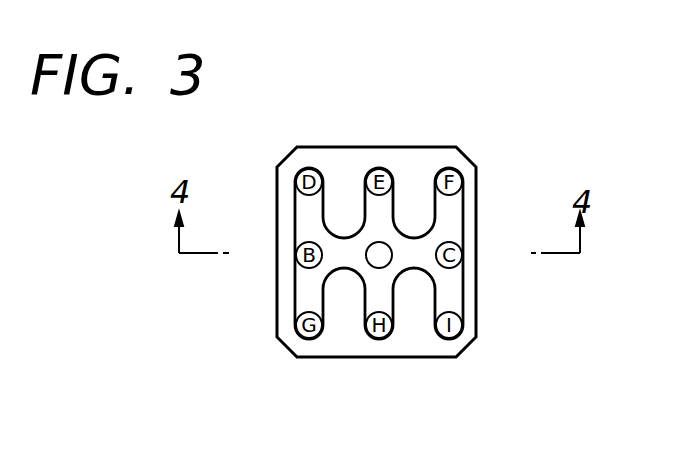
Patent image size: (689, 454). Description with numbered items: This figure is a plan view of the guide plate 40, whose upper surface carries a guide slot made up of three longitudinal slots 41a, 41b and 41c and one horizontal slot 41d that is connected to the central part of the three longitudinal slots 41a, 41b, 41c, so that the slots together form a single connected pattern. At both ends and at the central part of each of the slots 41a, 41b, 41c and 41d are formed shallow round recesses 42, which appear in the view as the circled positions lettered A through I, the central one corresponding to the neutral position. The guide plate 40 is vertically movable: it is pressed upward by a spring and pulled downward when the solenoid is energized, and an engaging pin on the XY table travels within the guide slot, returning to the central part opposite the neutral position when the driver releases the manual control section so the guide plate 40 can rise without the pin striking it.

The guide plate 40 is at (477, 310).
The longitudinal slot 41a is at (294, 199).
The longitudinal slot 41b is at (364, 198).
The longitudinal slot 41c is at (464, 210).
The horizontal slot 41d is at (413, 269).
The shallow round recess 42 is at (387, 244).